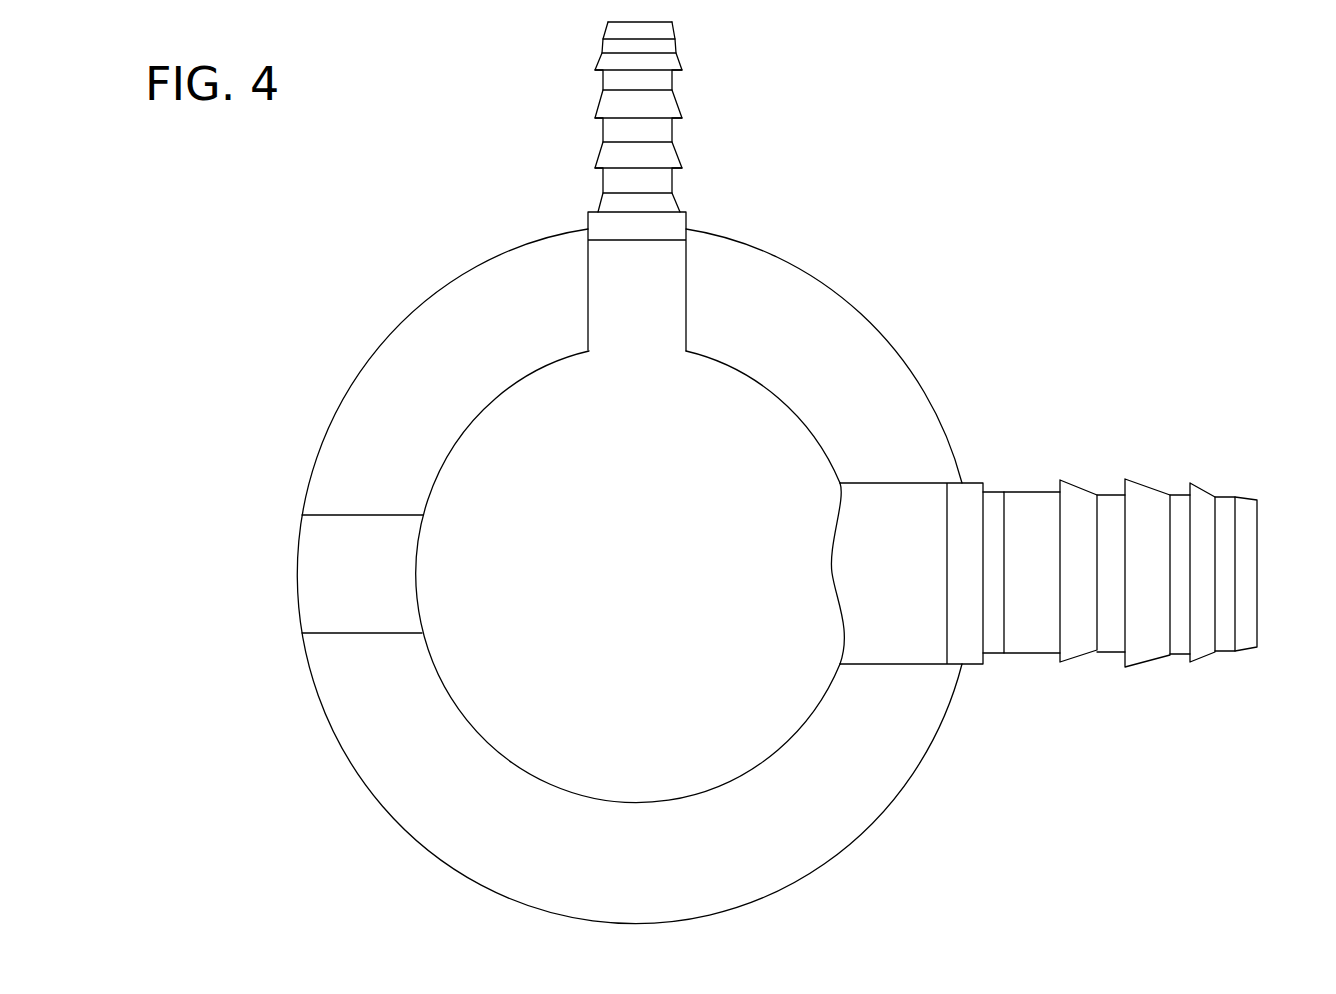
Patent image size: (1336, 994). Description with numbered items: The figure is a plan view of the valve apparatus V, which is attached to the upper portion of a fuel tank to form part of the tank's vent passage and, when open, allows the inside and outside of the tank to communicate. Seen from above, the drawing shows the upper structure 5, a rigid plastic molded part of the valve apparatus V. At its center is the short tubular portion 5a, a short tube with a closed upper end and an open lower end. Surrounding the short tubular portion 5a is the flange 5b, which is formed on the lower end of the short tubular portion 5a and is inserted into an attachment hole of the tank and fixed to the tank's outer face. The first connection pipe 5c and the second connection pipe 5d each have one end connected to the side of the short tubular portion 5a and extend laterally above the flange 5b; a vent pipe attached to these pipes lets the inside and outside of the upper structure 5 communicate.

The valve apparatus V is at (826, 245).
The upper structure 5 is at (756, 412).
The short tubular portion 5a is at (807, 425).
The flange 5b is at (917, 439).
The first connection pipe 5c is at (1104, 490).
The second connection pipe 5d is at (673, 112).